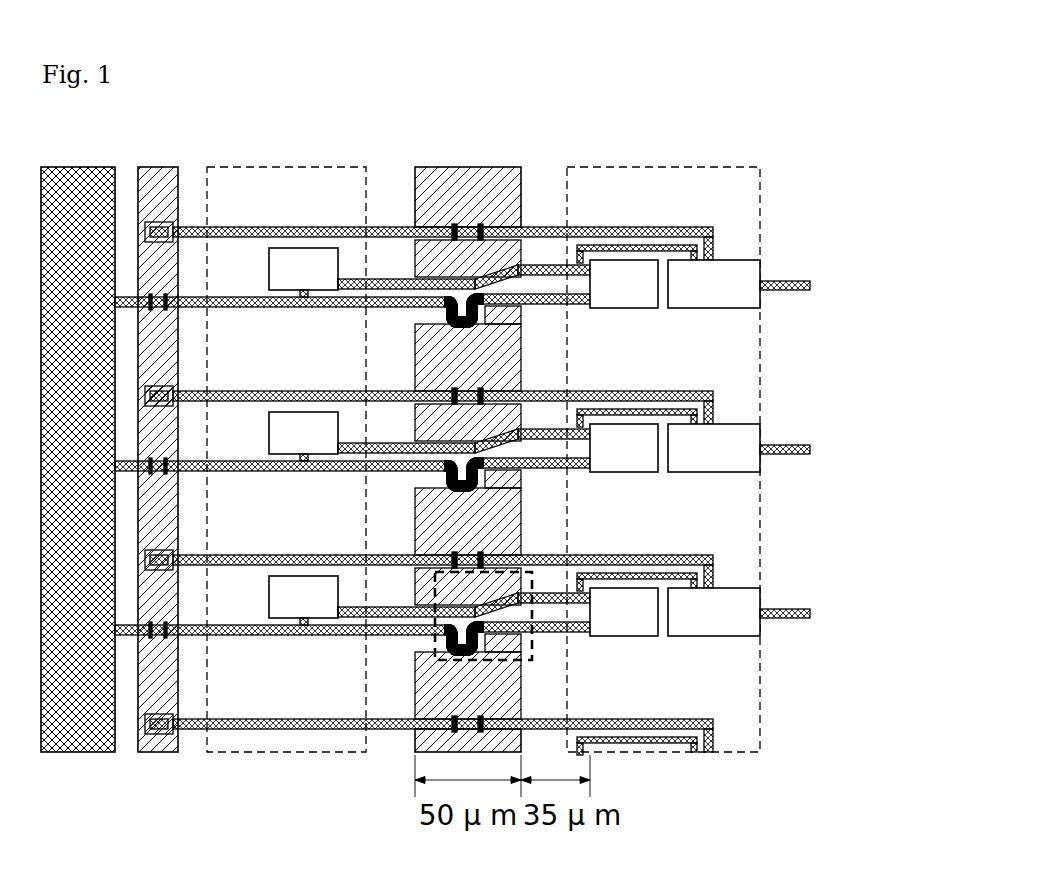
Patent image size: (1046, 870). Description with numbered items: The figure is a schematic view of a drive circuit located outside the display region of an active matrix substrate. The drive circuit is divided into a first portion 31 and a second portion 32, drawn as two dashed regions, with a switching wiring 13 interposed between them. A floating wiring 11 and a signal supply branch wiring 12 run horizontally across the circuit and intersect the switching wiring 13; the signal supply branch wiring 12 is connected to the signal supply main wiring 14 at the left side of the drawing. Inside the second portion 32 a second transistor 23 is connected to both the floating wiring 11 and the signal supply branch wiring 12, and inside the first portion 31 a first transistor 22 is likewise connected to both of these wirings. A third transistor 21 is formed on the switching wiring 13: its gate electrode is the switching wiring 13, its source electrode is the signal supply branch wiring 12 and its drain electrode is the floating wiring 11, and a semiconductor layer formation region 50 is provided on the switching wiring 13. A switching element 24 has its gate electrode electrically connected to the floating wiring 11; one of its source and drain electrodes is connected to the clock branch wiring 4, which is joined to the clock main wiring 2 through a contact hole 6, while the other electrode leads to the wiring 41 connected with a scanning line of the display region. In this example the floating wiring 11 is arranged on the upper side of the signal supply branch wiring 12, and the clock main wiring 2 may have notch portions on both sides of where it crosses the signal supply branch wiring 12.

The signal supply main wiring 14 is at (78, 752).
The contact hole 6 is at (158, 752).
The clock main wiring 2 is at (167, 752).
The second portion of drive circuit 32 is at (365, 160).
The semiconductor layer formation region 50 is at (462, 226).
The switching wiring 13 is at (503, 172).
The first portion of drive circuit 31 is at (760, 160).
The second transistor 23 is at (285, 607).
The clock branch wiring 4 is at (343, 633).
The signal supply branch wiring 12 is at (390, 625).
The floating wiring 11 is at (398, 608).
The third transistor 21 is at (437, 640).
The first transistor 22 is at (633, 628).
The switching element 24 is at (718, 628).
The wiring connected with scanning line of display region 41 is at (815, 275).